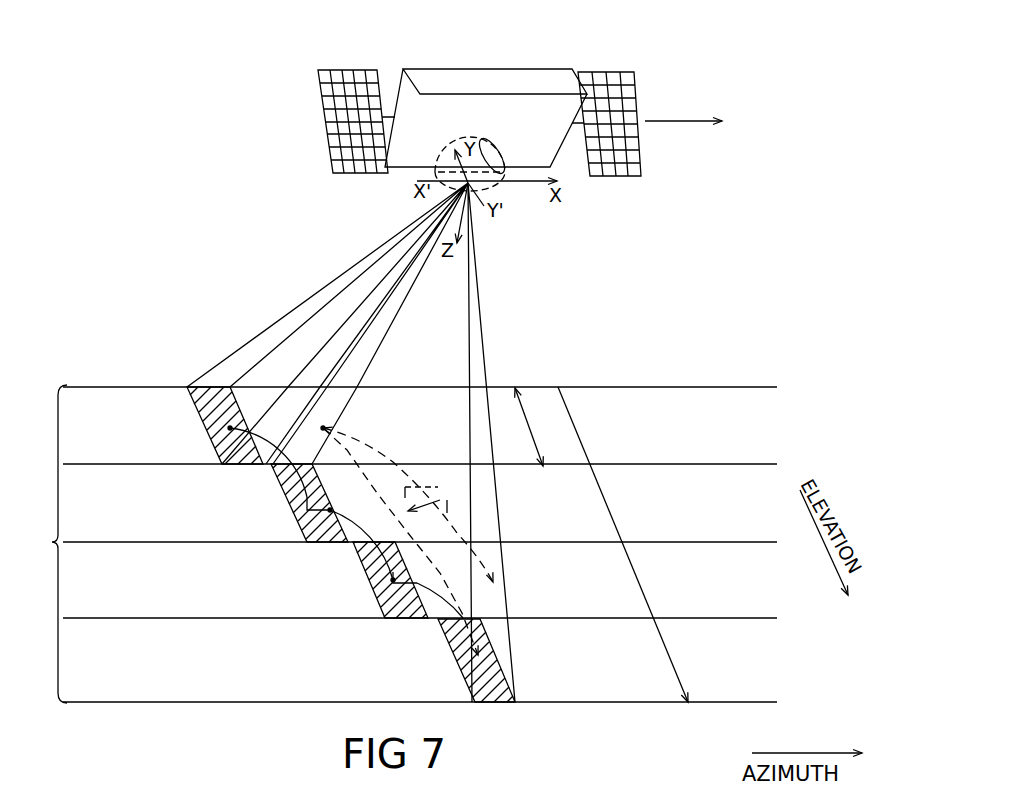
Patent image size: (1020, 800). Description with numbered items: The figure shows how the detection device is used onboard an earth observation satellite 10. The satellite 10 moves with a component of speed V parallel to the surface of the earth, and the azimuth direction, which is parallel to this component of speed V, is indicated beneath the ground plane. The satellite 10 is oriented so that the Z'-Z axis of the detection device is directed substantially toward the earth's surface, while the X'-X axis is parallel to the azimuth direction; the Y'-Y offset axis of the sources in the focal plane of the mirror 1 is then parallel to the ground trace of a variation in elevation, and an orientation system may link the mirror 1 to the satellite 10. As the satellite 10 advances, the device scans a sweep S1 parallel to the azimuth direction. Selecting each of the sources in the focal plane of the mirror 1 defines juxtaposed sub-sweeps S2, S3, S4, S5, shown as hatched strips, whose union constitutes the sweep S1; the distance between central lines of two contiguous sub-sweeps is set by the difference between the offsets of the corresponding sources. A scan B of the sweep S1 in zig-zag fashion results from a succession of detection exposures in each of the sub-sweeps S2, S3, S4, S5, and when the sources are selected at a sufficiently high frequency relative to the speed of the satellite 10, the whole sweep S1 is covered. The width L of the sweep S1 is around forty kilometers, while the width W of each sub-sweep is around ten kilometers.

The earth observation satellite 10 is at (477, 92).
The mirror 1 is at (503, 157).
The sweep S1 is at (402, 544).
The sub-sweep S2 is at (461, 648).
The sub-sweep S3 is at (373, 568).
The sub-sweep S4 is at (292, 488).
The sub-sweep S5 is at (203, 418).
The width of sub-sweep W is at (532, 427).
The width of the sweep L is at (623, 544).
The scan B is at (408, 505).
The component of speed V is at (683, 111).